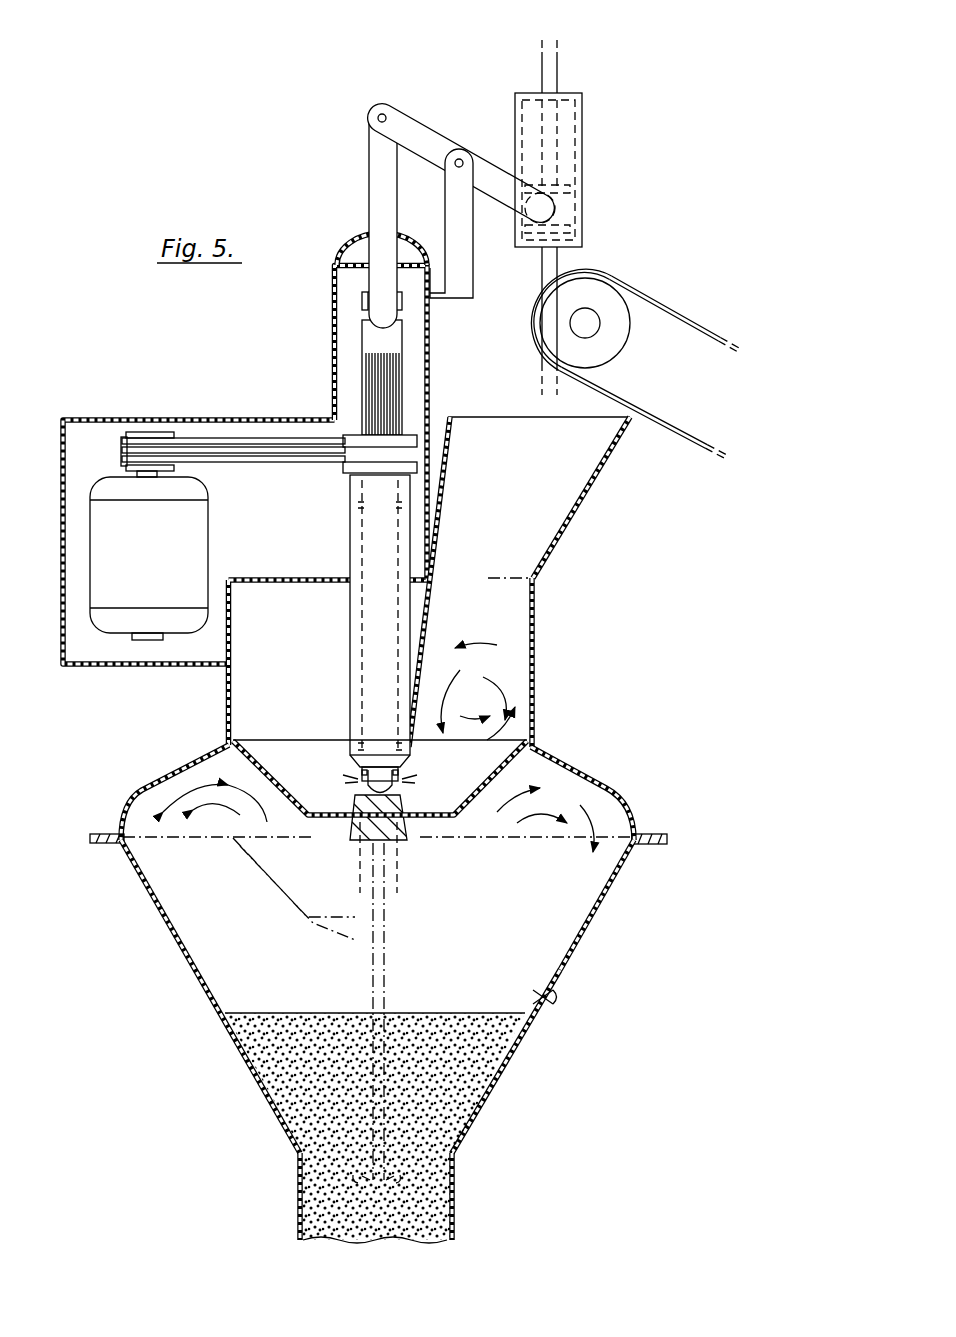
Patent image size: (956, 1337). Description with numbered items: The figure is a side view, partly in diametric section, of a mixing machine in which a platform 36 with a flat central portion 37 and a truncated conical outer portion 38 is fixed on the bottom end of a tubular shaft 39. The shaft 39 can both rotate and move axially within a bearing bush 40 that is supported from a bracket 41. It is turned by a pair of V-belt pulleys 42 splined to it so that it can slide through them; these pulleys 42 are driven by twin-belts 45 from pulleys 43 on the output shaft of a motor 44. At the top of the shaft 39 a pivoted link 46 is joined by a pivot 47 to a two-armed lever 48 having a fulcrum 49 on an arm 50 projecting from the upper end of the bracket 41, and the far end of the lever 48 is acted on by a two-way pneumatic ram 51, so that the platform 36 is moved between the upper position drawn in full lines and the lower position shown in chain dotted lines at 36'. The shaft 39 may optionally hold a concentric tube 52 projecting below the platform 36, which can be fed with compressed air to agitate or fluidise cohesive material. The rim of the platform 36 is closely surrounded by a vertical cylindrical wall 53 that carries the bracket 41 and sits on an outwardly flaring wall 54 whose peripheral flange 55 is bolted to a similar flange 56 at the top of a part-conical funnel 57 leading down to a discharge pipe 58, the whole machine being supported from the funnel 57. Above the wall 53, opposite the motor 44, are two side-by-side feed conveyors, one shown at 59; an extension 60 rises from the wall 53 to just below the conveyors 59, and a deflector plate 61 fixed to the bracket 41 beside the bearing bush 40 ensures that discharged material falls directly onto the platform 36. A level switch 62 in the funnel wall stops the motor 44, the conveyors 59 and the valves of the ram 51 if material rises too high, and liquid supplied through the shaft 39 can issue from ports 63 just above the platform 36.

The platform 36 is at (380, 725).
The lower position of platform 36' is at (377, 881).
The flat central portion 37 is at (324, 815).
The truncated conical outer portion 38 is at (253, 760).
The tubular shaft 39 is at (397, 368).
The bearing bush 40 is at (352, 619).
The bracket 41 is at (317, 577).
The V-belt pulleys 42 is at (407, 437).
The pulleys 43 is at (155, 433).
The motor 44 is at (202, 548).
The twin-belts 45 is at (242, 456).
The pivoted link 46 is at (375, 185).
The pivot 47 is at (383, 114).
The two-armed lever 48 is at (490, 177).
The fulcrum 49 is at (458, 158).
The arm 50 is at (463, 273).
The two-way pneumatic ram 51 is at (577, 170).
The concentric tube 52 is at (382, 983).
The vertical cylindrical wall 53 is at (537, 630).
The outwardly flaring wall 54 is at (577, 772).
The peripheral flange 55 is at (647, 834).
The flange 56 is at (645, 848).
The part-conical funnel 57 is at (580, 945).
The discharge pipe 58 is at (455, 1195).
The feed conveyor 59 is at (647, 303).
The extension 60 is at (588, 487).
The deflector plate 61 is at (443, 528).
The level switch 62 is at (553, 1002).
The ports 63 is at (400, 797).